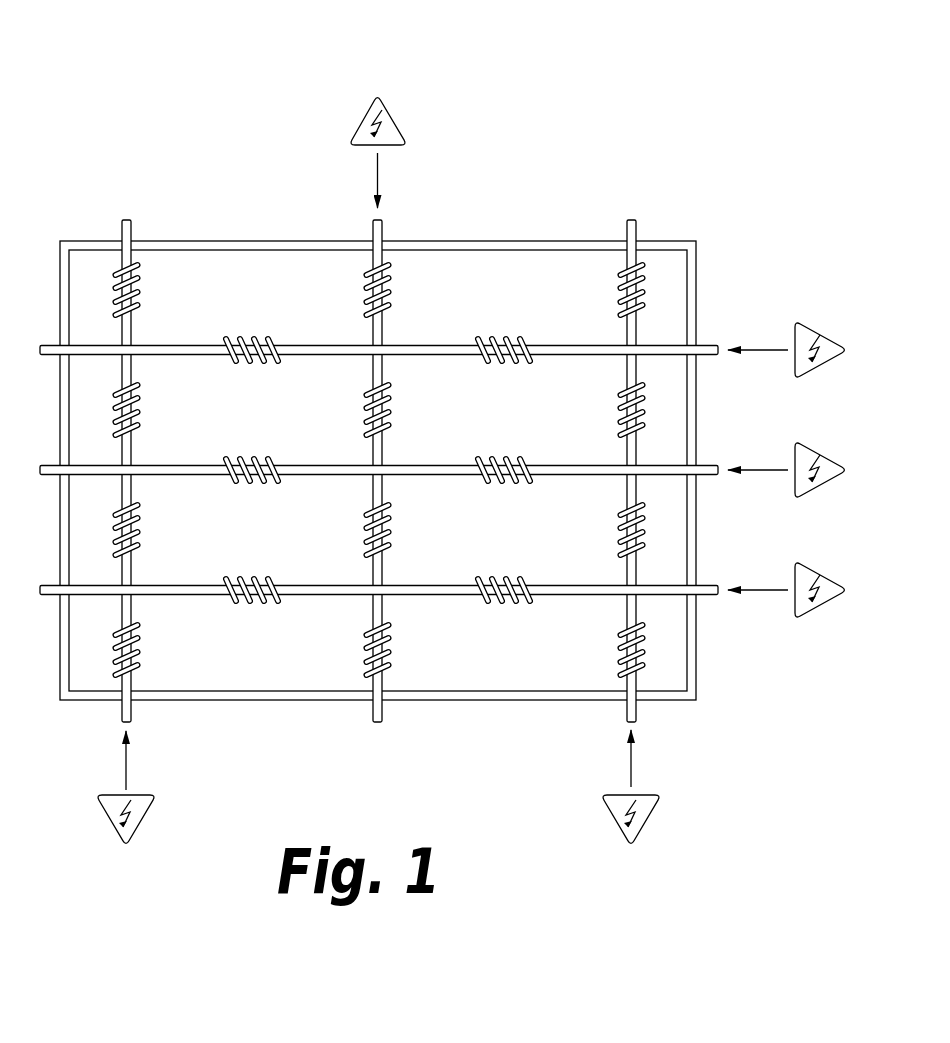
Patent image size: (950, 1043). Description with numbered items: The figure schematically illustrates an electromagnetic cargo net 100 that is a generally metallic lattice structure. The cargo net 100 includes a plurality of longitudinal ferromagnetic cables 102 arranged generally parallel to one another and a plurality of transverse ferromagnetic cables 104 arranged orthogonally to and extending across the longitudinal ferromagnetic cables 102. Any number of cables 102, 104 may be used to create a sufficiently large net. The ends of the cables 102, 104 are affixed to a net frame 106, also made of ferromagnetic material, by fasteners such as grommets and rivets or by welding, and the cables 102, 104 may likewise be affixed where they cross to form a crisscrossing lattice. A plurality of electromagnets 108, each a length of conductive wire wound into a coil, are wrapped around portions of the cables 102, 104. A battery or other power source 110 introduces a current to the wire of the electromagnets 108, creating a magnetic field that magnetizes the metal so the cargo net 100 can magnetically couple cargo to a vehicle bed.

The electromagnetic cargo net 100 is at (74, 83).
The longitudinal ferromagnetic cables 102 is at (627, 490).
The transverse ferromagnetic cables 104 is at (573, 596).
The net frame 106 is at (232, 242).
The electromagnets 108 is at (385, 295).
The power source 110 is at (822, 334).